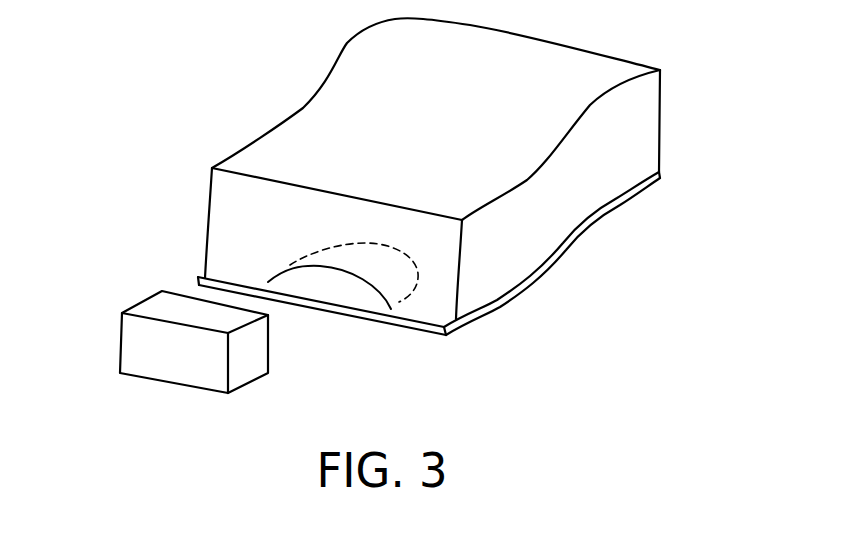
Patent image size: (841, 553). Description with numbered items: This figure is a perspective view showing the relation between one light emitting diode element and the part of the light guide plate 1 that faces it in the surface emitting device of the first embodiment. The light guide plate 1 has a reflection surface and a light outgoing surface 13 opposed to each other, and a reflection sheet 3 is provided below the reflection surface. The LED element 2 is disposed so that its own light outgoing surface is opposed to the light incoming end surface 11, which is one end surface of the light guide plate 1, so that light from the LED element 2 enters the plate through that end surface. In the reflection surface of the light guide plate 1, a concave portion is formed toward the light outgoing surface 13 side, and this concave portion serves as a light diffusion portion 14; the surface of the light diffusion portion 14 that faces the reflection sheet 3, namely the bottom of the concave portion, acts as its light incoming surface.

The light guide plate 1 is at (467, 196).
The light emitting diode (LED) element 2 is at (120, 337).
The reflection sheet 3 is at (396, 278).
The light incoming end surface 11 is at (428, 292).
The light outgoing surface 13 is at (314, 121).
The light diffusion portion 14 is at (323, 281).